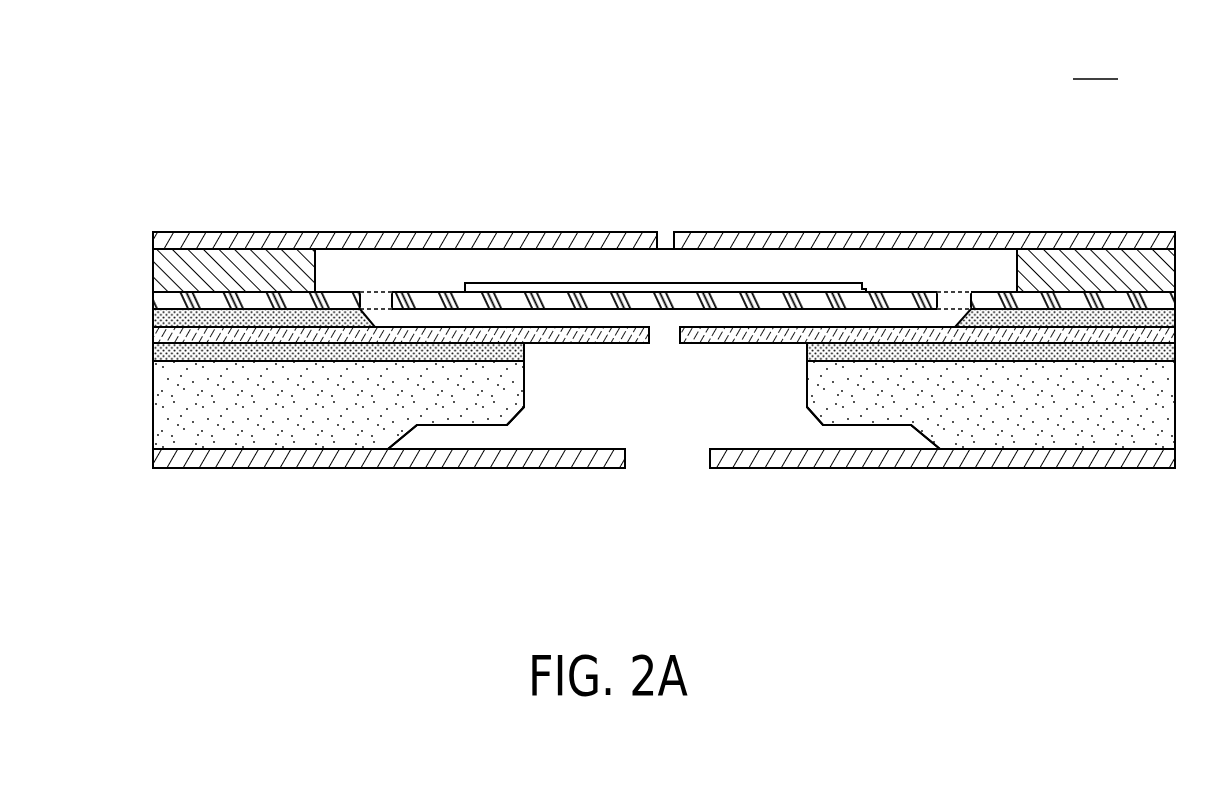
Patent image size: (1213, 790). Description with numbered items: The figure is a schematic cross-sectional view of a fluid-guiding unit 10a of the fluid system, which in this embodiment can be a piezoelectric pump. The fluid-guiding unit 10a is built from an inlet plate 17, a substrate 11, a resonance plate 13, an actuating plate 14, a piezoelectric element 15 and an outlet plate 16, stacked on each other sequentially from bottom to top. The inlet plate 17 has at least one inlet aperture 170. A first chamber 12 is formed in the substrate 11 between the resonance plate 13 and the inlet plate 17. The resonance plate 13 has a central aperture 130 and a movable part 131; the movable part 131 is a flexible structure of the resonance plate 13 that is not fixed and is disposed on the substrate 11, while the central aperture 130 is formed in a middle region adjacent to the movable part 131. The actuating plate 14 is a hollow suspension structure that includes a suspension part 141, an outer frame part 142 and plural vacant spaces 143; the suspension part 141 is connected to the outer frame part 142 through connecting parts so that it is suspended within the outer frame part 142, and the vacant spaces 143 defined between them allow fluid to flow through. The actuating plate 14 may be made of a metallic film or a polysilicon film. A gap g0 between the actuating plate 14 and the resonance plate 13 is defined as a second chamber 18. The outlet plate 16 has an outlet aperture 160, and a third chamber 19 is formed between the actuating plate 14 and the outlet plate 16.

The fluid-guiding unit 10a is at (1095, 63).
The substrate 11 is at (175, 412).
The first chamber 12 is at (595, 406).
The resonance plate 13 is at (167, 336).
The central aperture 130 is at (660, 347).
The movable part 131 is at (573, 345).
The actuating plate 14 is at (165, 297).
The suspension part 141 is at (870, 300).
The outer frame part 142 is at (262, 300).
The vacant spaces 143 is at (377, 302).
The piezoelectric element 15 is at (477, 290).
The outlet plate 16 is at (167, 244).
The outlet aperture 160 is at (664, 242).
The inlet plate 17 is at (172, 462).
The inlet aperture 170 is at (674, 456).
The second chamber 18 is at (720, 345).
The third chamber 19 is at (772, 267).
The gap g0 is at (167, 319).